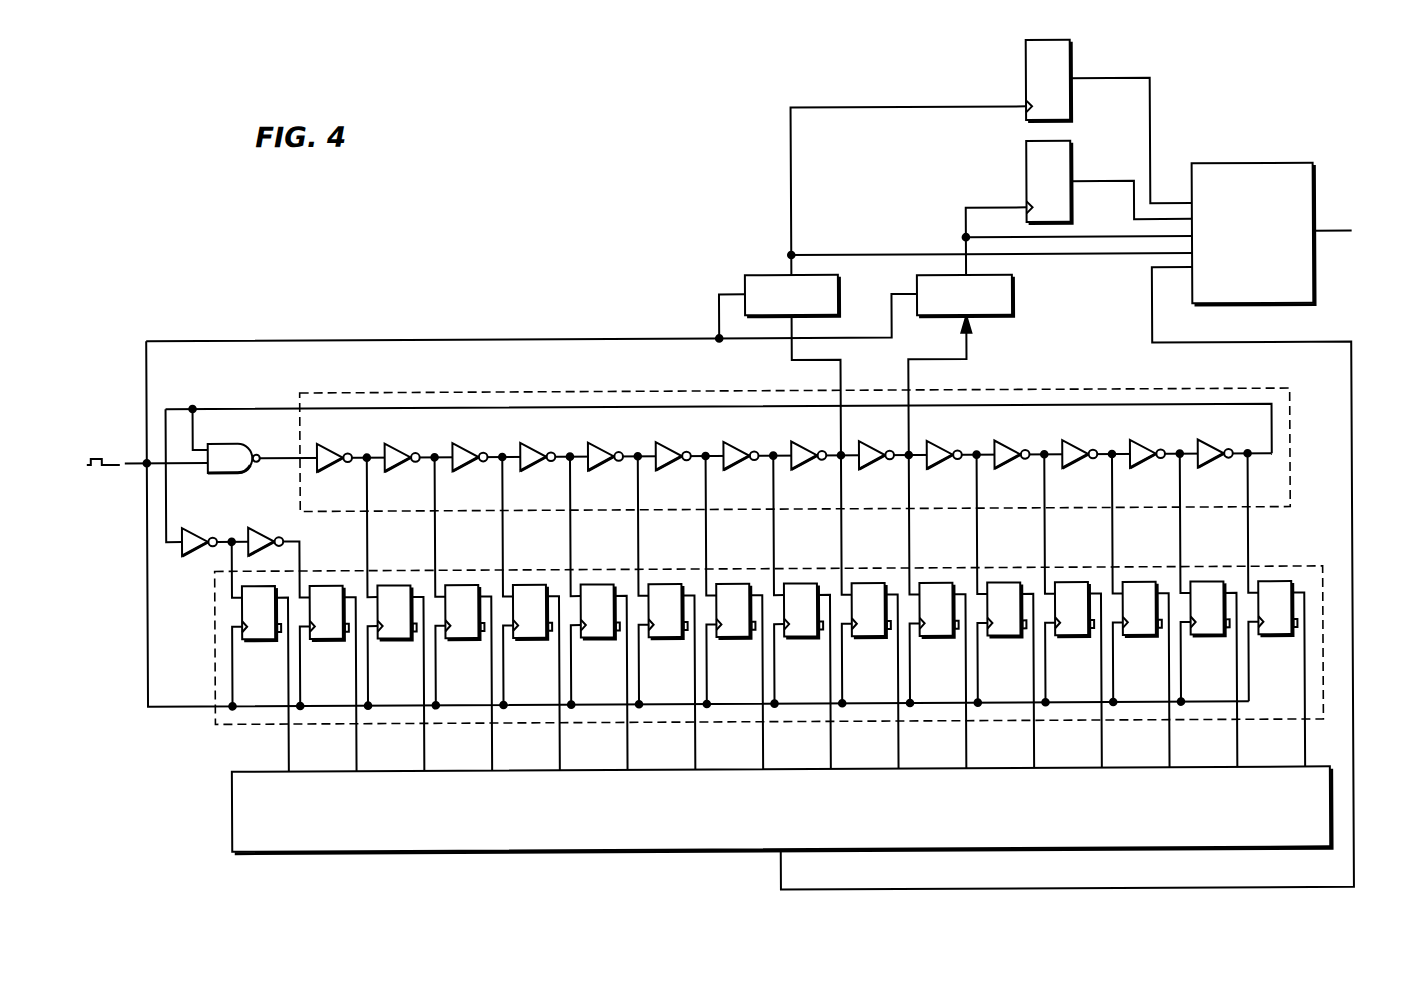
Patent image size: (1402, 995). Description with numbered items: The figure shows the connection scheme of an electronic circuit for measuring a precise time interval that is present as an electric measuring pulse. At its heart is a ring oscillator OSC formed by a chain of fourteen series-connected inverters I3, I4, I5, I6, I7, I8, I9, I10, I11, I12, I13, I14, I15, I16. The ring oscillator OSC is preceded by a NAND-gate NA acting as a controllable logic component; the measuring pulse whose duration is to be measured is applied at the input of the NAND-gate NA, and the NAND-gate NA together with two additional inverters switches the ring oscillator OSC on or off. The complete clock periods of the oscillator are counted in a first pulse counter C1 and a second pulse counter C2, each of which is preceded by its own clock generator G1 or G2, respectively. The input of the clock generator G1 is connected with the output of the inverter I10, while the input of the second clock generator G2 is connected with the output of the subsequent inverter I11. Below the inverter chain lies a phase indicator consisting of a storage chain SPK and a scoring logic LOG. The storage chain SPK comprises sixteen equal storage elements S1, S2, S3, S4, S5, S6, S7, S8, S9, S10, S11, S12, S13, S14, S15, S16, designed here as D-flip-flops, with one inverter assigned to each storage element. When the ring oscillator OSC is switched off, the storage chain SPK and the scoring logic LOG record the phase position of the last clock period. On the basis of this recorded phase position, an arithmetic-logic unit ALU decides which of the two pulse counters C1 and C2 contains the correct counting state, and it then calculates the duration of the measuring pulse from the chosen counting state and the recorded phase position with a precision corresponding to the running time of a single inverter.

The NAND-gate NA is at (234, 473).
The ring oscillator OSC is at (790, 437).
The storage chain SPK is at (768, 661).
The inverter I3 is at (343, 472).
The inverter I4 is at (411, 471).
The inverter I5 is at (478, 471).
The inverter I6 is at (546, 471).
The inverter I7 is at (614, 470).
The inverter I8 is at (682, 470).
The inverter I9 is at (749, 470).
The inverter I10 is at (817, 469).
The inverter I11 is at (885, 469).
The inverter I12 is at (953, 469).
The inverter I13 is at (1020, 468).
The inverter I14 is at (1088, 468).
The inverter I15 is at (1156, 468).
The inverter I16 is at (1224, 467).
The storage element S1 is at (258, 657).
The storage element S2 is at (326, 679).
The storage element S3 is at (393, 614).
The storage element S4 is at (461, 614).
The storage element S5 is at (529, 614).
The storage element S6 is at (597, 613).
The storage element S7 is at (664, 613).
The storage element S8 is at (732, 613).
The storage element S9 is at (800, 612).
The storage element S10 is at (868, 612).
The storage element S11 is at (935, 612).
The storage element S12 is at (1003, 611).
The storage element S13 is at (1071, 611).
The storage element S14 is at (1139, 611).
The storage element S15 is at (1206, 610).
The storage element S16 is at (1277, 610).
The clock generator G1 is at (968, 281).
The clock generator G2 is at (1051, 331).
The first pulse counter C1 is at (1109, 121).
The second pulse counter C2 is at (1109, 181).
The arithmetic-logic unit ALU is at (1253, 234).
The scoring logic LOG is at (782, 809).